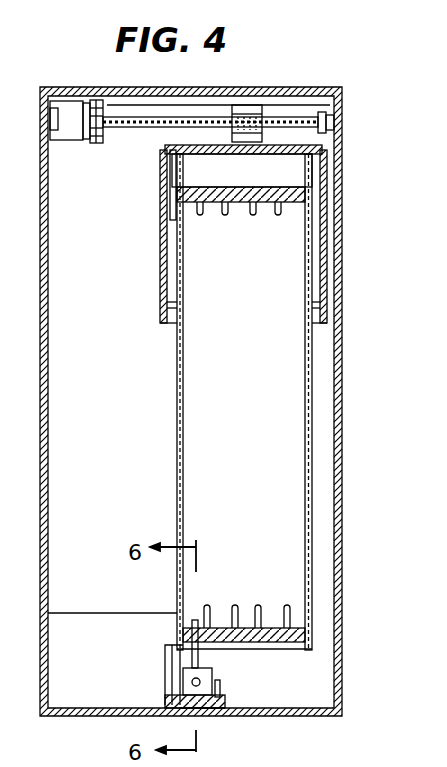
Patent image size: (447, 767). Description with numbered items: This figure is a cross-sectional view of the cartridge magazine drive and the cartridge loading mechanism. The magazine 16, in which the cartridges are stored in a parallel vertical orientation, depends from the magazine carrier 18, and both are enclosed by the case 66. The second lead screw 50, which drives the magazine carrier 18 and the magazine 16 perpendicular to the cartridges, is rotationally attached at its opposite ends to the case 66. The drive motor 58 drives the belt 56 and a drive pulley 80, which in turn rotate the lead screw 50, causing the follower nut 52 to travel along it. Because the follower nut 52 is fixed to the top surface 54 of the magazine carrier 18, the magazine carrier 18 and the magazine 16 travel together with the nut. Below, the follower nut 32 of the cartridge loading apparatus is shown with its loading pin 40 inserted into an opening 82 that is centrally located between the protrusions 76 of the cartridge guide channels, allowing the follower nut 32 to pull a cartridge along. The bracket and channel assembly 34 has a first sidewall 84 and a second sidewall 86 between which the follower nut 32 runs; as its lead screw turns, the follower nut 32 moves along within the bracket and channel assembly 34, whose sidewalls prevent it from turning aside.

The magazine 16 is at (342, 433).
The magazine carrier 18 is at (340, 190).
The follower nut 32 is at (212, 675).
The bracket and channel assembly 34 is at (133, 712).
The loading pin 40 is at (173, 657).
The second lead screw 50 is at (342, 97).
The follower nut 52 is at (250, 105).
The top surface 54 is at (157, 145).
The drive belt 56 is at (100, 143).
The motor 58 is at (70, 100).
The case 66 is at (334, 122).
The protrusions 76 is at (250, 650).
The drive pulley 80 is at (102, 98).
The opening 82 is at (287, 605).
The first sidewall 84 is at (165, 695).
The second sidewall 86 is at (218, 716).